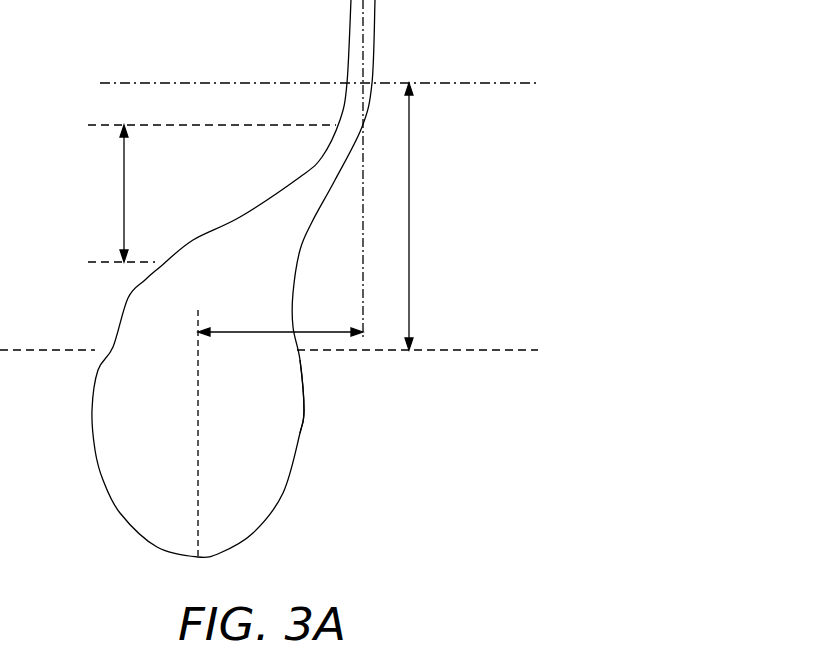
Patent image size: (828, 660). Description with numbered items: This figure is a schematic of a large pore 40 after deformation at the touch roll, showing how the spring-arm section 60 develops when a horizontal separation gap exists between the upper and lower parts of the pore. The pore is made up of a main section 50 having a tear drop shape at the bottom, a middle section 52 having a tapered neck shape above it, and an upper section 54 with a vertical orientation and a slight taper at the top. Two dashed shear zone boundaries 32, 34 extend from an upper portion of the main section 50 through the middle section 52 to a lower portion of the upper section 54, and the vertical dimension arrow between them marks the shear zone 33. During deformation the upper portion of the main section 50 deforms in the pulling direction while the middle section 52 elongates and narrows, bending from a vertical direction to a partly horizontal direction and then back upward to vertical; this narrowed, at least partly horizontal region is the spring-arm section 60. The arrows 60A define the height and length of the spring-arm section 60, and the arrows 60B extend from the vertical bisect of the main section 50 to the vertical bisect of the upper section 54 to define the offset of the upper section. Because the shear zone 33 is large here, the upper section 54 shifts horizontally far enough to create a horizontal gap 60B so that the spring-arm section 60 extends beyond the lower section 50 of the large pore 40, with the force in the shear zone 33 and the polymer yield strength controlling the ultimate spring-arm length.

The shear zone boundary 32 is at (485, 351).
The shear zone 33 is at (410, 210).
The shear zone boundary 34 is at (494, 84).
The large pore 40 is at (272, 497).
The main section 50 is at (304, 410).
The middle section 52 is at (312, 222).
The upper section 54 is at (375, 18).
The spring-arm section 60 is at (273, 193).
The arrows defining height of spring-arm section 60A is at (124, 195).
The horizontal gap 60B is at (252, 325).